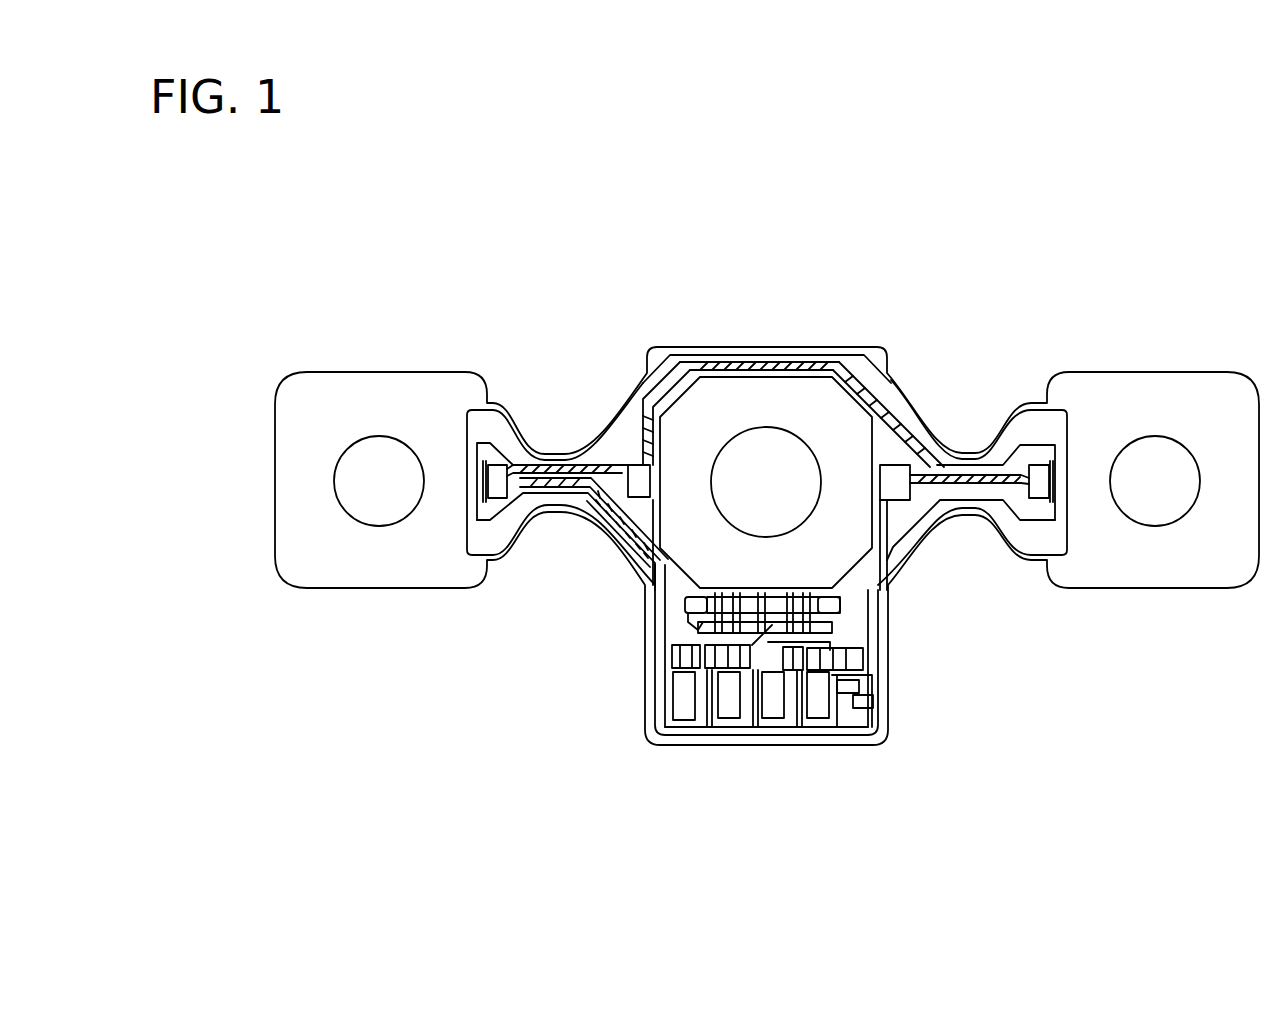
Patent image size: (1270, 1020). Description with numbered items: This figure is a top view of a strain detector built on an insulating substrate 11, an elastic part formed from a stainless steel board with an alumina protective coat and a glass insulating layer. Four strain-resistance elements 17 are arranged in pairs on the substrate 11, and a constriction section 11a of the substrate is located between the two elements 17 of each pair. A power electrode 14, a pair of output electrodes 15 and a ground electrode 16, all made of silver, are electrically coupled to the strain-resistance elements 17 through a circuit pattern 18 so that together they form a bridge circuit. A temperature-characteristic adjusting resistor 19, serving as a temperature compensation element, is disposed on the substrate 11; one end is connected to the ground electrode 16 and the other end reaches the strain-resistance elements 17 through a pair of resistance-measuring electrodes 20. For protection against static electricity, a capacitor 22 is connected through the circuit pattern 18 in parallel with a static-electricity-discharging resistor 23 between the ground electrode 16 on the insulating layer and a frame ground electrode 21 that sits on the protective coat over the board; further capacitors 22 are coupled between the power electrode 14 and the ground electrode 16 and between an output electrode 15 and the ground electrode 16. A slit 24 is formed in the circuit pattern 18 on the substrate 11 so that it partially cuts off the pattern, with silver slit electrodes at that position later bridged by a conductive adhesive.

The insulating substrate 11 is at (877, 352).
The constriction section 11a is at (557, 447).
The power electrode 14 is at (722, 715).
The output electrodes 15 is at (682, 712).
The ground (GND) electrode 16 is at (818, 707).
The strain-resistance elements 17 is at (487, 470).
The circuit pattern 18 is at (610, 462).
The temperature-characteristic adjusting resistor 19 is at (790, 606).
The resistance-measuring electrodes 20 is at (688, 603).
The frame ground (GND) electrode 21 is at (857, 707).
The capacitor 22 is at (712, 658).
The static-electricity-discharging resistor 23 is at (852, 700).
The slit 24 is at (842, 684).